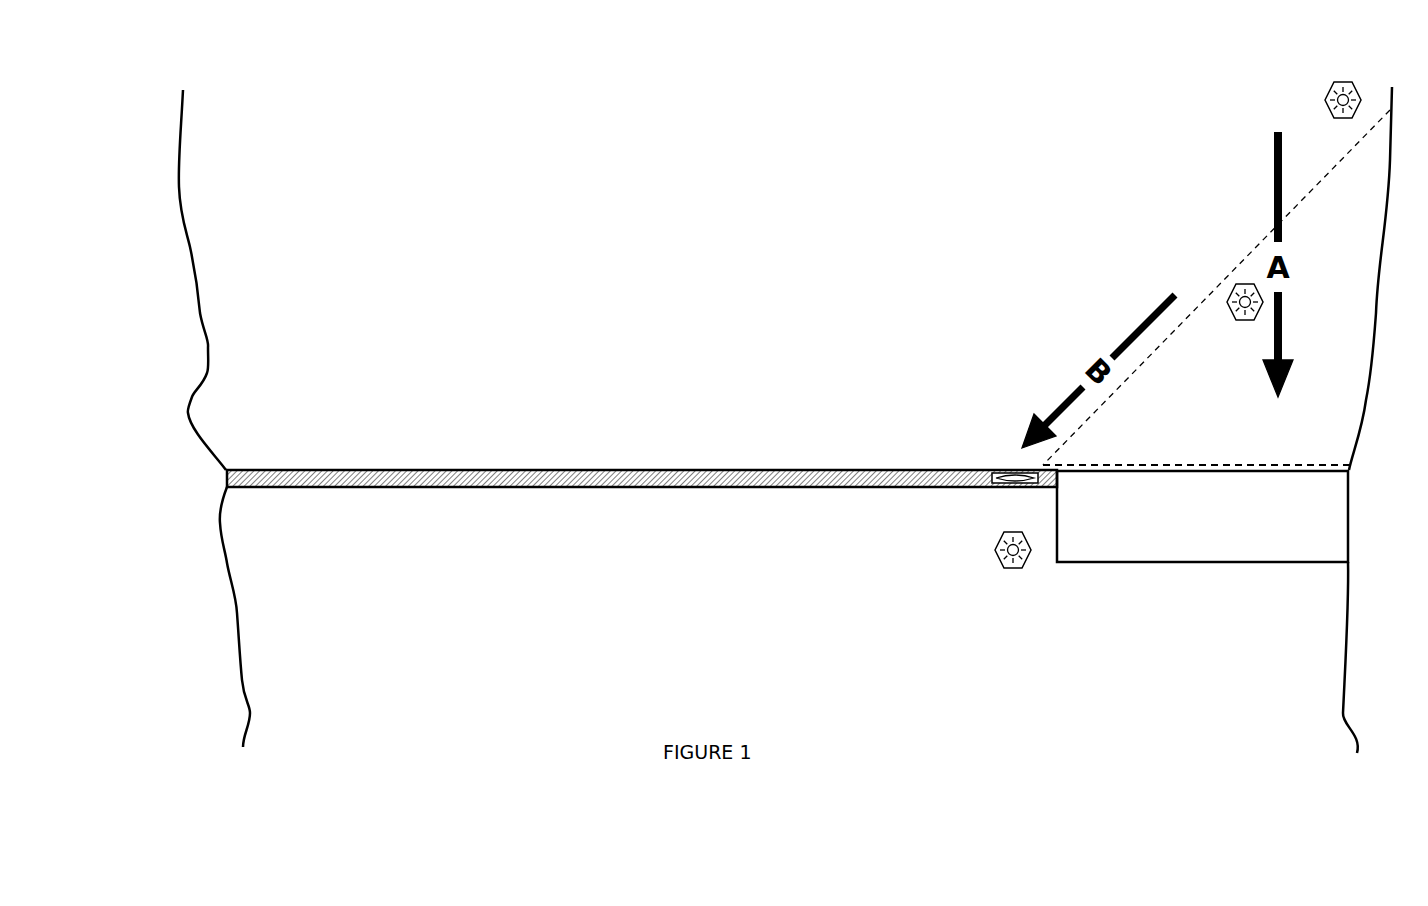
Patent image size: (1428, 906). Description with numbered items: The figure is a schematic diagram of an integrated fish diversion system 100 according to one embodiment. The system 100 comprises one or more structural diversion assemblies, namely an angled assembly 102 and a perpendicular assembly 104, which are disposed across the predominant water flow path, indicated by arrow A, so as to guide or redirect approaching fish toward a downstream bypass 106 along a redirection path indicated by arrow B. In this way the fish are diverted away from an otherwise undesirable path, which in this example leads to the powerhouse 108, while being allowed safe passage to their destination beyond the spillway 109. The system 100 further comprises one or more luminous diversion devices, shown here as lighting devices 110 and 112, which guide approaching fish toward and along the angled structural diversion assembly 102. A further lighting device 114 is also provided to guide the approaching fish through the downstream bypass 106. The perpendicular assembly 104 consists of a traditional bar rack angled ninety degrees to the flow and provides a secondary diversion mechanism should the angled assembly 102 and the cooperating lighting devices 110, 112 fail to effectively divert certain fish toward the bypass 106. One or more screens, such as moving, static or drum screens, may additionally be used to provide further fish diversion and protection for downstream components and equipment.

The integrated fish diversion system 100 is at (1232, 117).
The angled structural diversion assembly 102 is at (1296, 203).
The perpendicular structural diversion assembly 104 is at (1147, 465).
The downstream bypass 106 is at (1007, 493).
The powerhouse 108 is at (1193, 563).
The spillway 109 is at (517, 487).
The lighting device 110 is at (1324, 106).
The lighting device 112 is at (1243, 320).
The lighting device 114 is at (1013, 568).